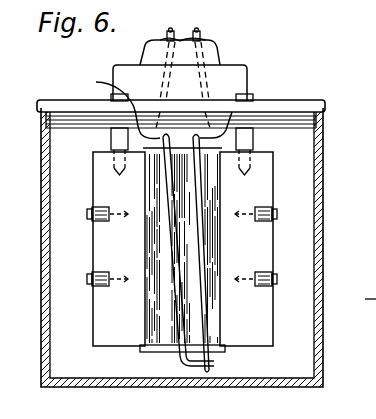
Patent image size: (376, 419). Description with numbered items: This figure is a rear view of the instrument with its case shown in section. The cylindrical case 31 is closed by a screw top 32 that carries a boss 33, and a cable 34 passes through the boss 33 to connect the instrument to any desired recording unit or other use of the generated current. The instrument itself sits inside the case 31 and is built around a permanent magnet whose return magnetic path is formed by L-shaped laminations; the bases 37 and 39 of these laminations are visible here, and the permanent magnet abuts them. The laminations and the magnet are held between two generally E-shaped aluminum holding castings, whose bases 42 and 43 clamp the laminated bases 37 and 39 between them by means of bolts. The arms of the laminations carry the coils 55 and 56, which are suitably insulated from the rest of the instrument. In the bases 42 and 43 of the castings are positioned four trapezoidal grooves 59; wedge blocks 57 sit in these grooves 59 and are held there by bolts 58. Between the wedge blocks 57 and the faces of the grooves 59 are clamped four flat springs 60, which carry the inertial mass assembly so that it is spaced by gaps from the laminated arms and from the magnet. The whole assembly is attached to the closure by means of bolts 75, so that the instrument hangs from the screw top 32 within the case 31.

The cylindrical case 31 is at (324, 153).
The screw top 32 is at (248, 97).
The boss 33 is at (218, 55).
The cable 34 is at (175, 37).
The laminated base 37 is at (178, 197).
The laminated base 39 is at (148, 332).
The base of holding casting 42 is at (119, 249).
The base of holding casting 43 is at (246, 249).
The coil 55 is at (96, 82).
The coil 56 is at (216, 363).
The wedge block 57 is at (108, 275).
The bolt 58 is at (90, 276).
The trapezoidal groove 59 is at (106, 287).
The flat spring 60 is at (90, 210).
The bolt 75 is at (110, 160).